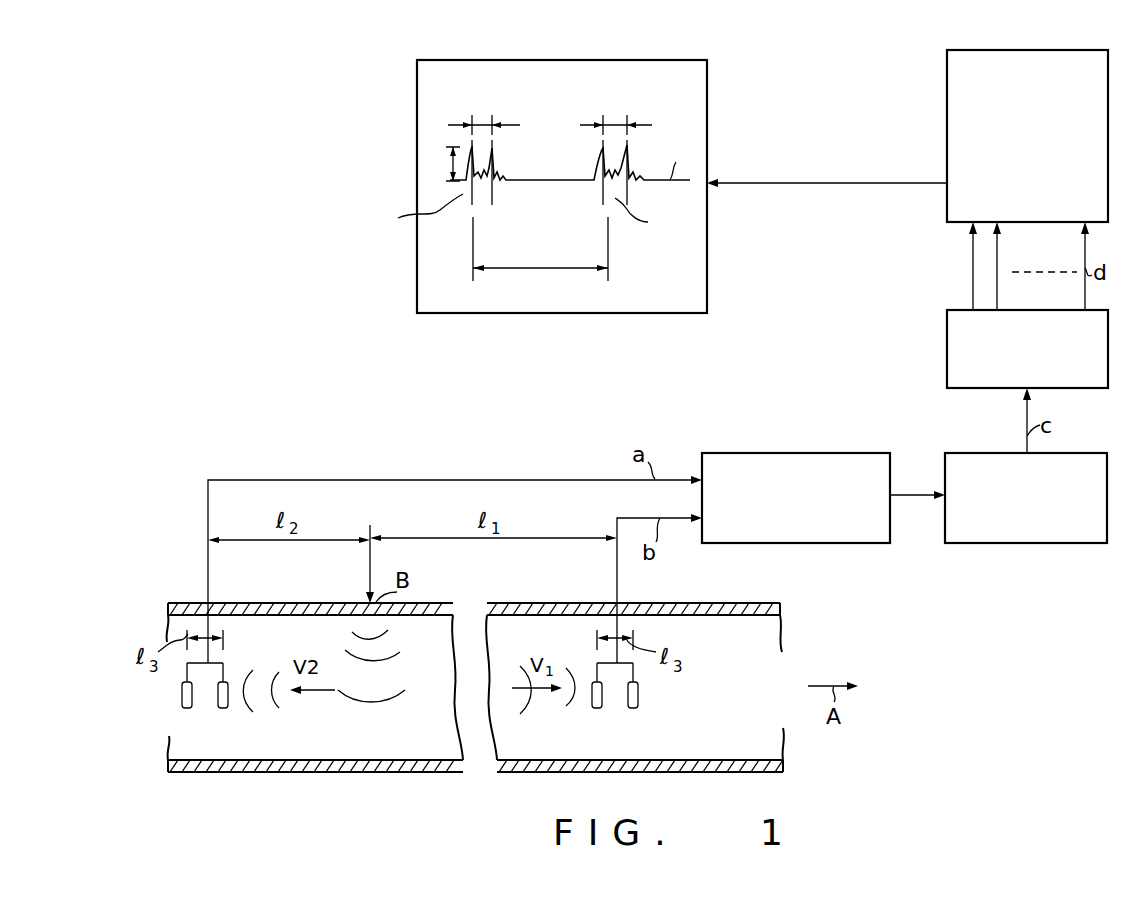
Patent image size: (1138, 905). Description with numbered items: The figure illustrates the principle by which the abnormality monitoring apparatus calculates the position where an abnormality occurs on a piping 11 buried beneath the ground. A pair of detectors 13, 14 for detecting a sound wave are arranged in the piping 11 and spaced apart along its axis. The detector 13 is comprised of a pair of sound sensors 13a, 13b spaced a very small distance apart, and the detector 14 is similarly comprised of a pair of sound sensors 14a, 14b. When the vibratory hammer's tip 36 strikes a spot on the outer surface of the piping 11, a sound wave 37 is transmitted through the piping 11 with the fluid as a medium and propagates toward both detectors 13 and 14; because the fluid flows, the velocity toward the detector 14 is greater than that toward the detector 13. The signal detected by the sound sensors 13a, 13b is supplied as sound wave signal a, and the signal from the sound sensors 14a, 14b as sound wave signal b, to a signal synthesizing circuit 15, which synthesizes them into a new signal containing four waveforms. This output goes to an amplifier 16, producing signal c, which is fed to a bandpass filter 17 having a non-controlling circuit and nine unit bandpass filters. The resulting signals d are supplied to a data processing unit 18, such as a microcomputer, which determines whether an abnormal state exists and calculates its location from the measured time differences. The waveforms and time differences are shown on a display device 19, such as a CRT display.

The piping 11 is at (352, 772).
The detector 13 is at (211, 708).
The sound sensor 13a is at (190, 708).
The sound sensor 13b is at (228, 705).
The detector 14 is at (646, 708).
The sound sensor 14a is at (597, 708).
The sound sensor 14b is at (637, 708).
The signal synthesizing circuit 15 is at (805, 543).
The amplifier 16 is at (1030, 543).
The bandpass filter 17 is at (947, 358).
The data processing unit 18 is at (947, 74).
The display device 19 is at (582, 60).
The vibratory hammer's tip 36 is at (366, 577).
The sound wave 37 is at (530, 706).